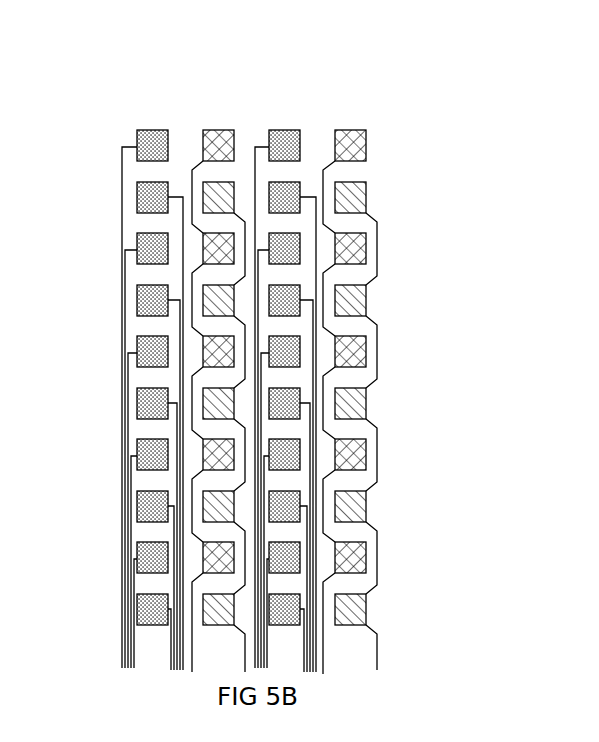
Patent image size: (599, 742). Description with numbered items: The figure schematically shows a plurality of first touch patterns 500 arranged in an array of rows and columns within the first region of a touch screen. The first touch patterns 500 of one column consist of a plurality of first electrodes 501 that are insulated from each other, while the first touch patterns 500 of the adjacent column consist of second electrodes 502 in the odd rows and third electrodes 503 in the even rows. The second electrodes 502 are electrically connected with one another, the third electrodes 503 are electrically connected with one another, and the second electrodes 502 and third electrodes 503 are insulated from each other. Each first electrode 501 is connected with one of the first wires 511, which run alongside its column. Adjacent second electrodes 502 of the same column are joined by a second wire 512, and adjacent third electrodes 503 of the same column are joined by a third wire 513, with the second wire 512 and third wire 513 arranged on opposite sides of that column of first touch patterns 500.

The first touch pattern 500 is at (309, 348).
The first electrode 501 is at (152, 140).
The second electrode 502 is at (367, 146).
The third electrode 503 is at (367, 191).
The first wire 511 is at (122, 437).
The second wire 512 is at (323, 166).
The third wire 513 is at (378, 252).